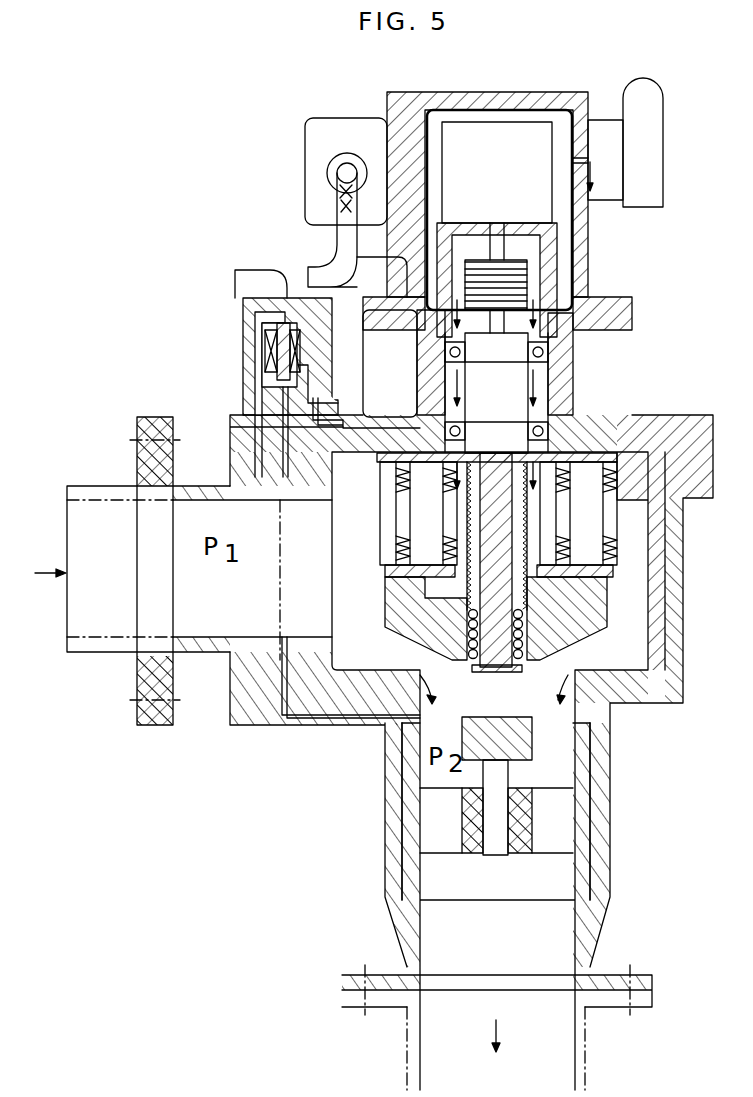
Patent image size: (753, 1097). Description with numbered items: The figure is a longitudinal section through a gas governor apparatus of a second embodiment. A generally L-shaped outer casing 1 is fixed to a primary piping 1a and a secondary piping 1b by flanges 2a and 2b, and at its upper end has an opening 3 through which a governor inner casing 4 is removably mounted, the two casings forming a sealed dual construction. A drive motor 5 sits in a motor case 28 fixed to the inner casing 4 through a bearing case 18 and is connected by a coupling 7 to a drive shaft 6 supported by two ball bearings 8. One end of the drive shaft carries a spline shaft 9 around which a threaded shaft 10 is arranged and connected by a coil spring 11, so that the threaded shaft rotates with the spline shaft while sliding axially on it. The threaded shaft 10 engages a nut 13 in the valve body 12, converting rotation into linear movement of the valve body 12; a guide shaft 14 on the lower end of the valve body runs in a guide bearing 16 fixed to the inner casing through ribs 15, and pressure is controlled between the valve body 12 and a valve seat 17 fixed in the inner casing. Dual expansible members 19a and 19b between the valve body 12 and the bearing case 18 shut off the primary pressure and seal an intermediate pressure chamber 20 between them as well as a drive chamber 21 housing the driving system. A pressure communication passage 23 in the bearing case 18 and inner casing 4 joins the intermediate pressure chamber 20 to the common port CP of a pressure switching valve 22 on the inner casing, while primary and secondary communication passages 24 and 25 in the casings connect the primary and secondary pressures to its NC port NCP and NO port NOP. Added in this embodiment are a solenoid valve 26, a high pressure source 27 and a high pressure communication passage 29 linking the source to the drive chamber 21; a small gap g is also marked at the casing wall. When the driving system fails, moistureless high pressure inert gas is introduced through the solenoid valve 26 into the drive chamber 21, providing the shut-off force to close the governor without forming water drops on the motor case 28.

The outer casing 1 is at (675, 722).
The primary piping 1a is at (90, 486).
The secondary piping 1b is at (575, 1052).
The flange 2a is at (172, 418).
The flange 2b is at (618, 980).
The opening 3 is at (665, 480).
The governor inner casing 4 is at (657, 548).
The drive motor 5 is at (467, 132).
The drive shaft 6 is at (522, 387).
The coupling 7 is at (540, 283).
The ball bearings 8 is at (548, 350).
The spline shaft 9 is at (493, 582).
The threaded shaft 10 is at (527, 608).
The coil spring 11 is at (523, 632).
The valve body 12 is at (620, 672).
The nut 13 is at (563, 593).
The guide shaft 14 is at (497, 813).
The ribs 15 is at (560, 835).
The guide bearing 16 is at (525, 855).
The valve seat 17 is at (626, 722).
The bearing case 18 is at (422, 360).
The expansible member 19a is at (457, 490).
The expansible member 19b is at (457, 548).
The intermediate pressure chamber 20 is at (570, 513).
The drive chamber 21 is at (530, 455).
The pressure switching valve 22 is at (252, 314).
The pressure communication passage 23 is at (376, 418).
The primary communication passage 24 is at (268, 428).
The secondary communication passage 25 is at (282, 470).
The solenoid valve 26 is at (608, 127).
The high pressure source 27 is at (650, 120).
The motor case 28 is at (412, 108).
The high pressure communication passage 29 is at (592, 162).
The gap g is at (600, 141).
The NO port NOP is at (275, 402).
The NC port NCP is at (285, 410).
The common port CP is at (313, 400).